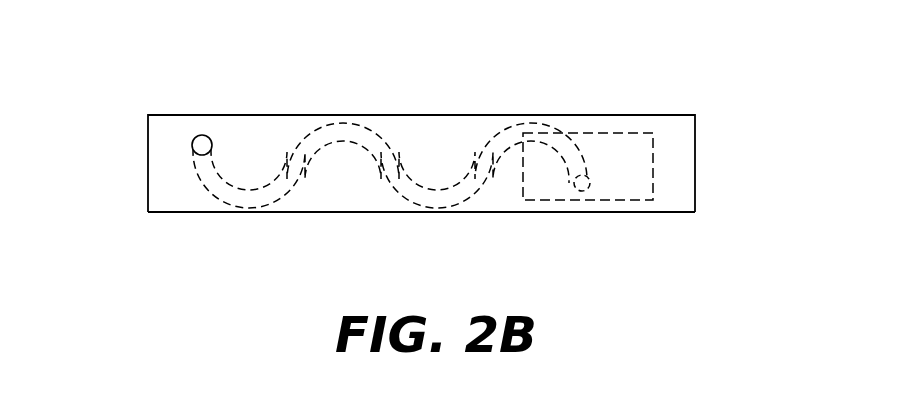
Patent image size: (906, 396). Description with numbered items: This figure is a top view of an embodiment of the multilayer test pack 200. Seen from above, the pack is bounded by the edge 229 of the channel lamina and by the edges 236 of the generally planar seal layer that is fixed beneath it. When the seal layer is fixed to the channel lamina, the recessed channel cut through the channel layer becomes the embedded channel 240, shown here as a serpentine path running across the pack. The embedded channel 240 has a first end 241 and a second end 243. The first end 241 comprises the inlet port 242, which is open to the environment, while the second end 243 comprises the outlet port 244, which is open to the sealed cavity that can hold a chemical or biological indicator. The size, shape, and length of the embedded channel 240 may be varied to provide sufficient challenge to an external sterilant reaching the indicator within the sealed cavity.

The multilayer test pack 200 is at (411, 149).
The edge 229 is at (421, 172).
The edges 236 is at (546, 213).
The embedded channel 240 is at (388, 148).
The first end 241 is at (140, 93).
The inlet port 242 is at (192, 145).
The second end 243 is at (615, 178).
The outlet port 244 is at (583, 191).